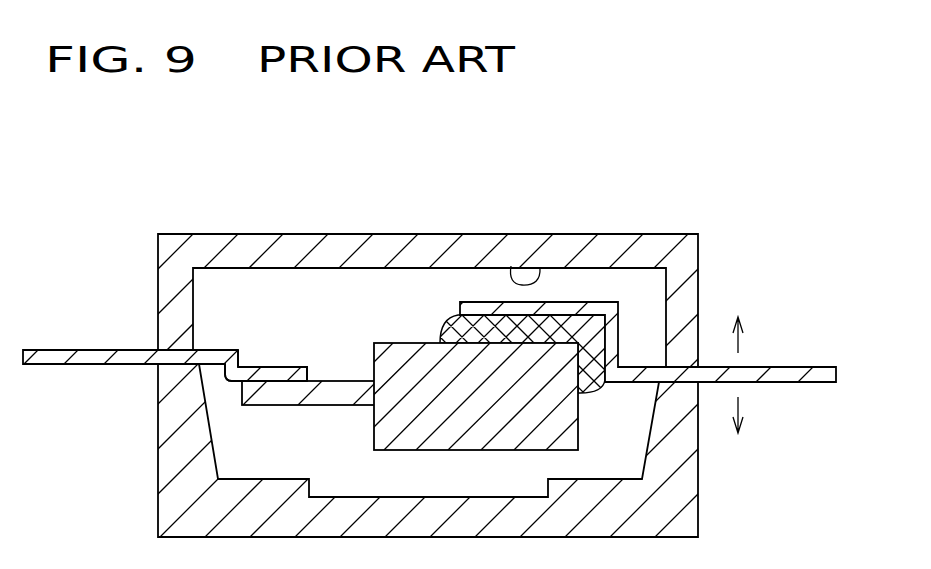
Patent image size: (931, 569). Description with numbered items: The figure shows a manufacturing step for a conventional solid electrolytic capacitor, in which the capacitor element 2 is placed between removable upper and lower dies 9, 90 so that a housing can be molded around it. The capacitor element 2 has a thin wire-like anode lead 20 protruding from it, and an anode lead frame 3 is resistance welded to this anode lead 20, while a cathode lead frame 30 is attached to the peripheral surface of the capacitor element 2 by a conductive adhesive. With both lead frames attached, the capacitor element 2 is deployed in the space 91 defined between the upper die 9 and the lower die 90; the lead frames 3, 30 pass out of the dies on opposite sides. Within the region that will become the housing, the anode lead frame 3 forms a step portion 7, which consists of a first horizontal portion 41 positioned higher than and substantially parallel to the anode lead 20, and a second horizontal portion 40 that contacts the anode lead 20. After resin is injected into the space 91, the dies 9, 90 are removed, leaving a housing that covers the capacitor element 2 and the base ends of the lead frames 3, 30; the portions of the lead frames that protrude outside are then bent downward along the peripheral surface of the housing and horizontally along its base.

The upper die 9 is at (613, 247).
The lower die 90 is at (685, 482).
The space 91 is at (540, 268).
The anode lead frame 3 is at (86, 349).
The step portion 7 is at (292, 183).
The second horizontal portion 40 is at (266, 373).
The first horizontal portion 41 is at (208, 417).
The anode lead 20 is at (352, 390).
The capacitor element 2 is at (410, 343).
The cathode lead frame 30 is at (783, 373).